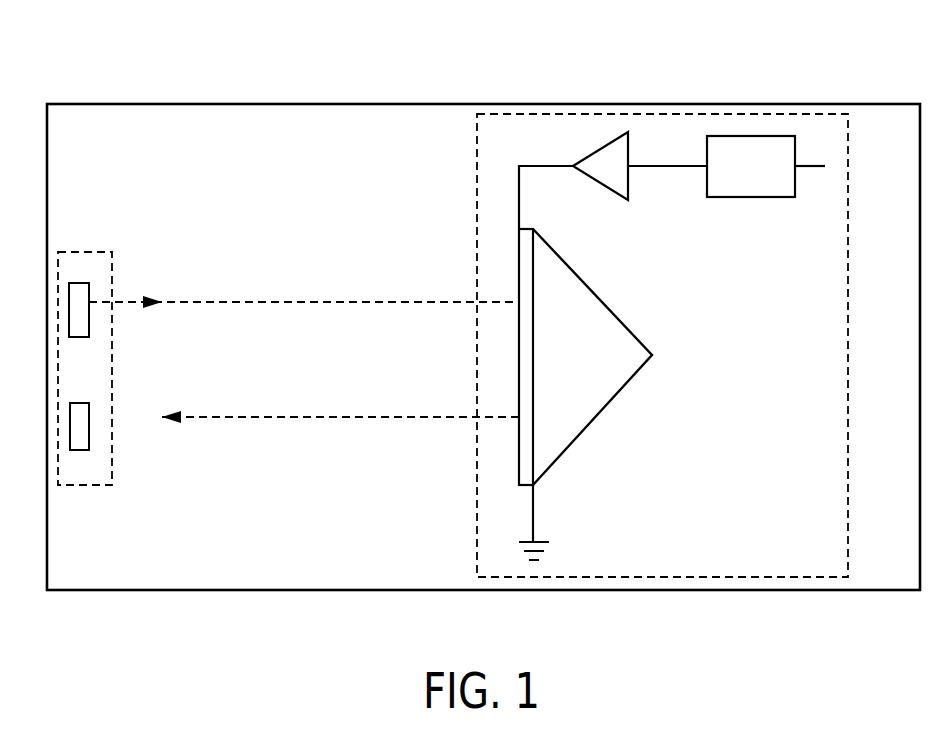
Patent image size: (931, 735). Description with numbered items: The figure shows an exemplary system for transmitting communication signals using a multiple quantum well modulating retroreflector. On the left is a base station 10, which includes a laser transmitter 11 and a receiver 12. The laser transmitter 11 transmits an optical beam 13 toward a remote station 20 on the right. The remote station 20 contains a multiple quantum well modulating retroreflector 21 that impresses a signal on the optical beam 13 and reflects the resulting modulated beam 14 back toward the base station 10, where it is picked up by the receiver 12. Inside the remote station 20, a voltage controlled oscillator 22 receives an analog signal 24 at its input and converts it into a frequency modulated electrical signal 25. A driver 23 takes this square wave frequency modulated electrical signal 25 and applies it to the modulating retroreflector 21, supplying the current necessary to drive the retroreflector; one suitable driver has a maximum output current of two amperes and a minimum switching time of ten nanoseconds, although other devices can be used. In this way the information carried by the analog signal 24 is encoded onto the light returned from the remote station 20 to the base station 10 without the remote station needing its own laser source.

The base station 10 is at (84, 478).
The laser transmitter 11 is at (78, 292).
The receiver 12 is at (80, 427).
The optical beam 13 is at (188, 300).
The modulated beam 14 is at (408, 420).
The remote station 20 is at (676, 526).
The multiple quantum well modulating retroreflector 21 is at (617, 318).
The voltage controlled oscillator 22 is at (750, 136).
The driver 23 is at (615, 132).
The analog signal 24 is at (808, 168).
The frequency modulated electrical signal 25 is at (643, 168).